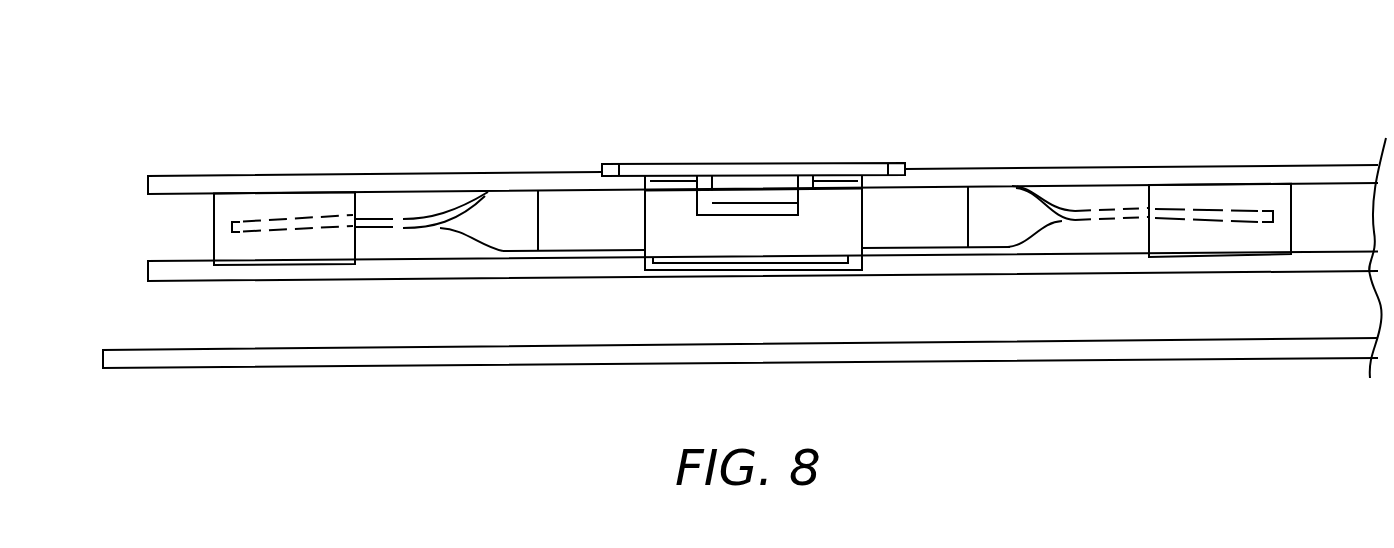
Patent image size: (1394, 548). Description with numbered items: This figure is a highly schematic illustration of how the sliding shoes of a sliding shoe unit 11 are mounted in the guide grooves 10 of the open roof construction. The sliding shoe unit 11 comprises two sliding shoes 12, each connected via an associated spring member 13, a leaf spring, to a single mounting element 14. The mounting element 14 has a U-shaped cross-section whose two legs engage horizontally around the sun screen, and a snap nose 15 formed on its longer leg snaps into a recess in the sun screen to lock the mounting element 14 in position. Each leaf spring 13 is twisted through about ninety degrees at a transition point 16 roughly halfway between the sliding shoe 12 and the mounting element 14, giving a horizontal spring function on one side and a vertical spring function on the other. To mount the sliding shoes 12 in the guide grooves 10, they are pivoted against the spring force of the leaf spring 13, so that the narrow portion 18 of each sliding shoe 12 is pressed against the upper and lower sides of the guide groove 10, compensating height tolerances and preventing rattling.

The guide groove 10 is at (1348, 220).
The sliding shoe unit 11 is at (540, 125).
The sliding shoe 12 is at (282, 208).
The spring member 13 is at (403, 219).
The mounting element 14 is at (850, 163).
The snap nose 15 is at (758, 190).
The transition point 16 is at (485, 210).
The narrow portion 18 is at (751, 172).